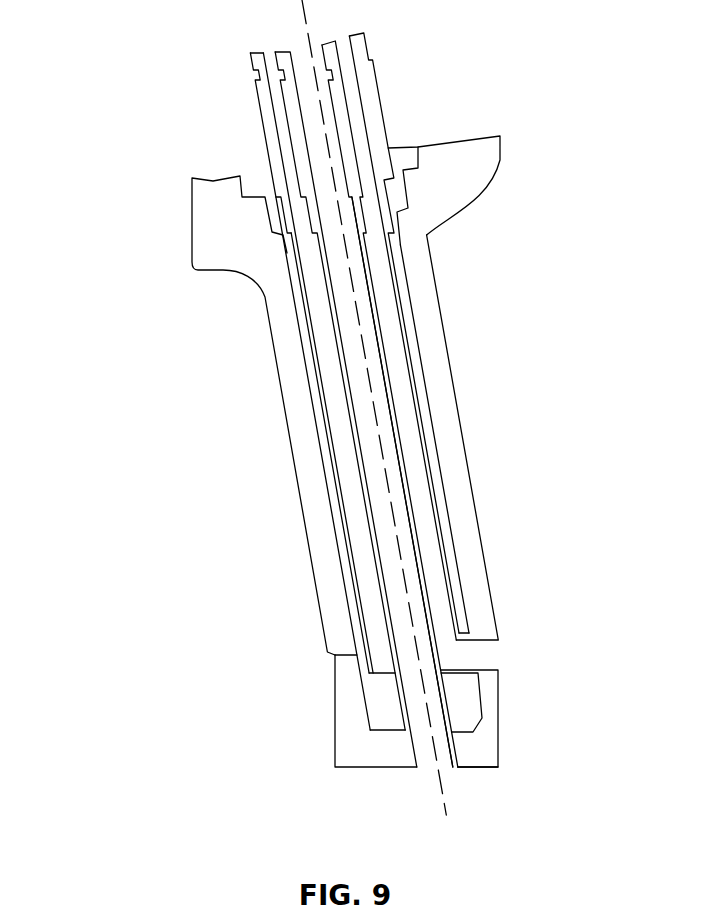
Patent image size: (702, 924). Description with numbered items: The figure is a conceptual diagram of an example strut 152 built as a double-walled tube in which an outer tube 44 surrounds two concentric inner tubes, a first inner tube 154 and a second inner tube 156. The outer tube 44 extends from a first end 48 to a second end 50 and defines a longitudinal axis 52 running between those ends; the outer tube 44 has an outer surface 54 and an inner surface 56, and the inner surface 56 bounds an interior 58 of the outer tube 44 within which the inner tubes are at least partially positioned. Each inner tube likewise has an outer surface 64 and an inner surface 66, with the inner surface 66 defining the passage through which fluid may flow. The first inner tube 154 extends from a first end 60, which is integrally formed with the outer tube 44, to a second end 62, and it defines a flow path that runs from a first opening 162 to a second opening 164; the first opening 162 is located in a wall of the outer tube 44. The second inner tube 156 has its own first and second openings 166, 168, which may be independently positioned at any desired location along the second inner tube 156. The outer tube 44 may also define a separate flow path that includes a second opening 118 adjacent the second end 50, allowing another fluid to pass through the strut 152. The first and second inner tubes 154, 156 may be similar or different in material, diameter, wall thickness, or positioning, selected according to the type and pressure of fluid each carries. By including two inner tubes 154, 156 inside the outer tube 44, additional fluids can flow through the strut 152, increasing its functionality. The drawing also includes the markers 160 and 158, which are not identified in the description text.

The strut 152 is at (100, 168).
The second opening 164 is at (265, 58).
The second end 62 is at (260, 105).
The second electrode layer 160 is at (290, 136).
The second opening 168 is at (325, 66).
The second opening 118 is at (405, 140).
The second end 50 is at (440, 148).
The interior 58 is at (413, 278).
The inner surface 56 is at (418, 352).
The longitudinal axis 52 is at (378, 447).
The outer surface 54 is at (465, 452).
The outer tube 44 is at (298, 457).
The first inner tube 154 is at (348, 553).
The second inner tube 156 is at (418, 562).
The outer surface 64 is at (355, 590).
The inner surface 66 is at (363, 618).
The first end 60 is at (333, 655).
The first opening 162 is at (498, 650).
The insert 158 is at (445, 723).
The first end 48 is at (362, 757).
The first opening 166 is at (450, 772).